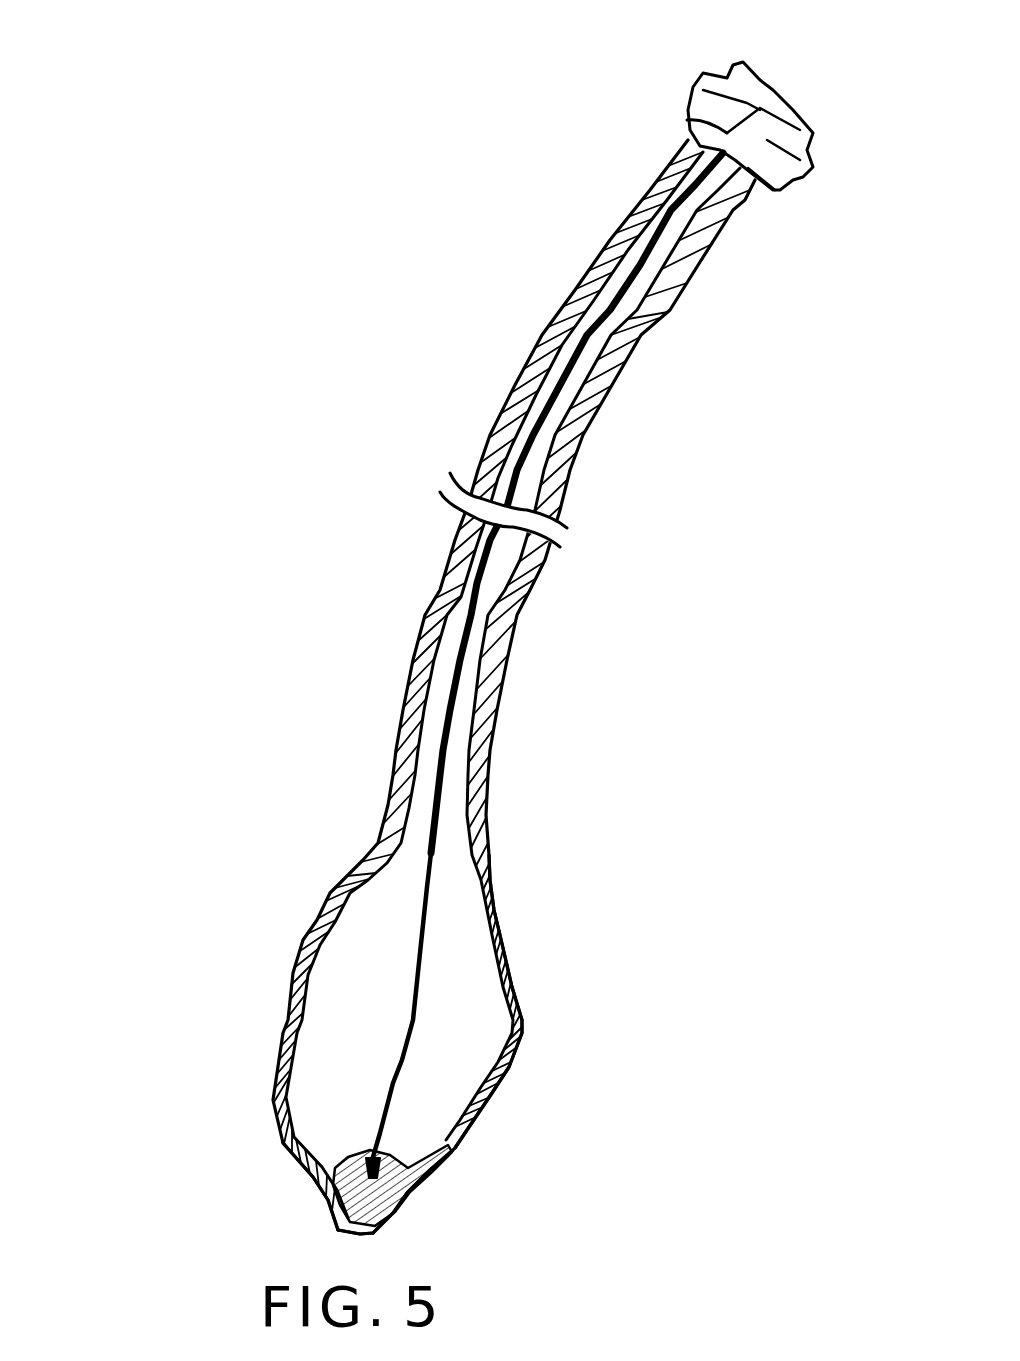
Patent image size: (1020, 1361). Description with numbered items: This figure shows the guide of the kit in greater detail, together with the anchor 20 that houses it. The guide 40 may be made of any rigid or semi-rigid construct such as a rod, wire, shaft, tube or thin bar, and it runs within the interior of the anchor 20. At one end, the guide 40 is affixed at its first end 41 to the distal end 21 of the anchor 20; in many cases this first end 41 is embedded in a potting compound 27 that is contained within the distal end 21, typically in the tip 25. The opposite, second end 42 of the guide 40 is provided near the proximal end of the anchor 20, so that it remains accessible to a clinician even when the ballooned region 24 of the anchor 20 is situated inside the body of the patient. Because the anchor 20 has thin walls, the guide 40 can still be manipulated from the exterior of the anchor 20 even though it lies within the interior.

The anchor 20 is at (520, 652).
The distal end 21 is at (323, 1238).
The ballooned region 24 is at (527, 1000).
The tip 25 is at (383, 1237).
The potting compound 27 is at (327, 1187).
The guide 40 is at (437, 917).
The first end 41 is at (443, 1163).
The second end 42 is at (690, 140).